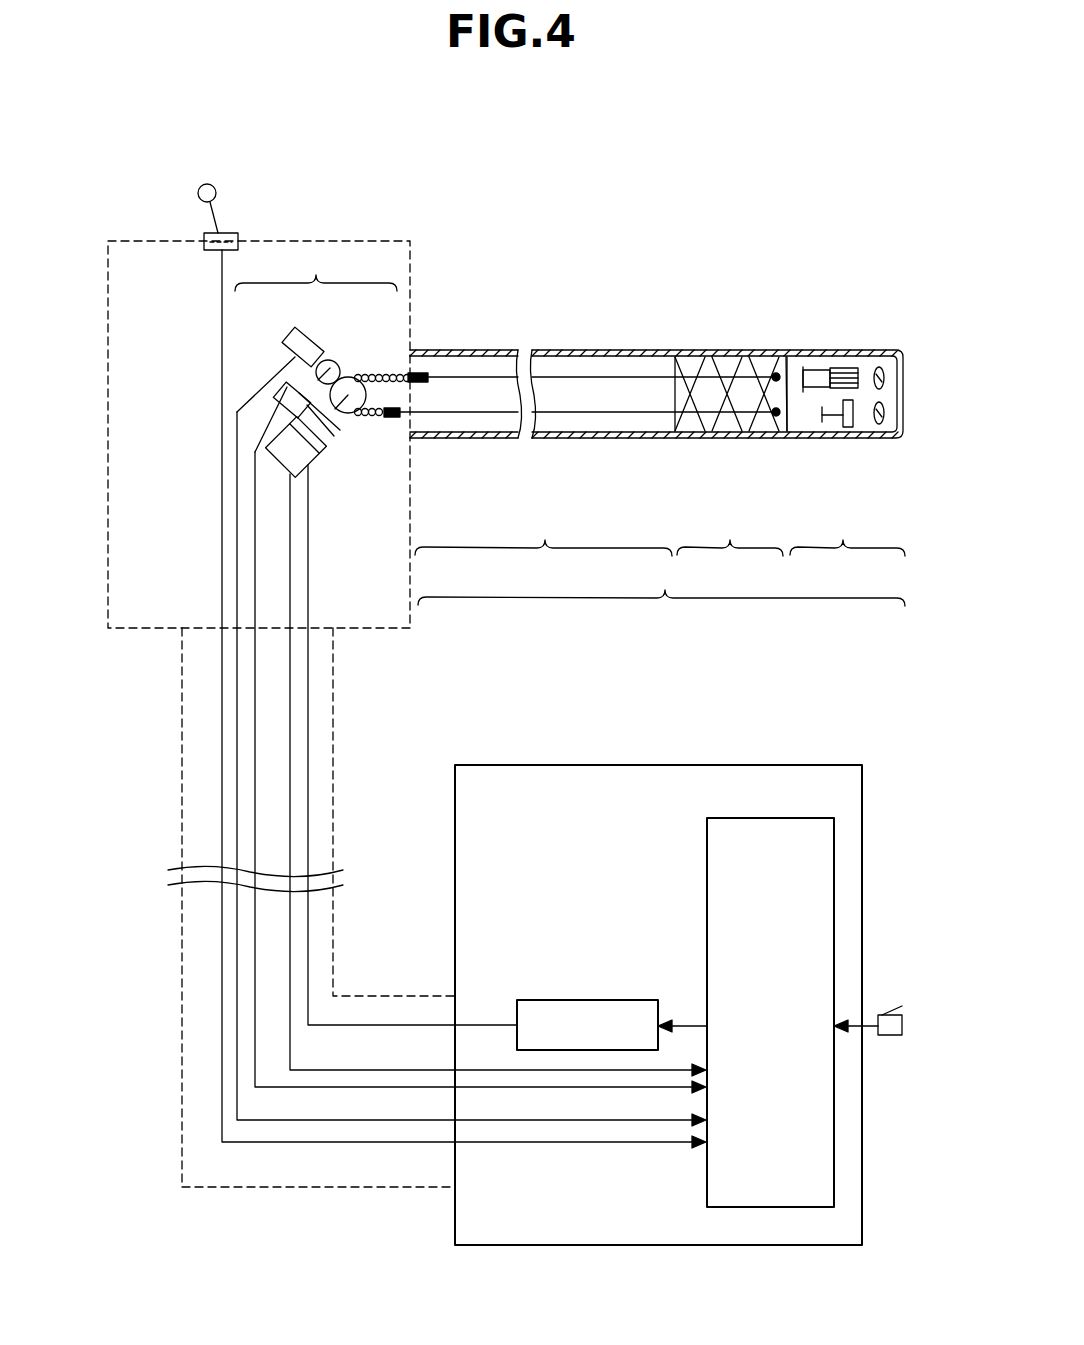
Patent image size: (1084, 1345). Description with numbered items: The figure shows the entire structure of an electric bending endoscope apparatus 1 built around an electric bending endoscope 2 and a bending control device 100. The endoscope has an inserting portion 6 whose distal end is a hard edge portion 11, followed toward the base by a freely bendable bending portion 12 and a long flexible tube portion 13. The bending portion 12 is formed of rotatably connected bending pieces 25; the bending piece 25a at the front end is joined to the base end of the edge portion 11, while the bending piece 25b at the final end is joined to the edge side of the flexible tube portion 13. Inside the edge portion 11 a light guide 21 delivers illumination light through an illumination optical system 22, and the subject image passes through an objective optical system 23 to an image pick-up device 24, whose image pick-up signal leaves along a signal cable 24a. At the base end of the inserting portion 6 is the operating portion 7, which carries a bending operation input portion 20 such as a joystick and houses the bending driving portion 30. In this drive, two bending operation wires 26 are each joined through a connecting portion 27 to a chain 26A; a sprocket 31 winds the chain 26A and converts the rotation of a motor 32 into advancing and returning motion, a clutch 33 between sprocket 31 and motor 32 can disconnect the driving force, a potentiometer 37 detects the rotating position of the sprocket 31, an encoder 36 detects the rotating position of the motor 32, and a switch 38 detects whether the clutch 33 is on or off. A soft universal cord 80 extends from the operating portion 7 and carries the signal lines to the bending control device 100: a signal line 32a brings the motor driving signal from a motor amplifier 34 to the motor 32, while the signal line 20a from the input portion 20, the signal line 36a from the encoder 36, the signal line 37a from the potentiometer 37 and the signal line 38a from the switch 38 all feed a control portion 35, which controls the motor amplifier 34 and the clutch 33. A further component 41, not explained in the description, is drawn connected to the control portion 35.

The electric bending endoscope apparatus 1 is at (145, 1085).
The electric bending endoscope 2 is at (492, 210).
The inserting portion 6 is at (657, 495).
The operating portion 7 is at (138, 240).
The edge portion 11 is at (847, 566).
The bending portion 12 is at (730, 566).
The flexible tube portion 13 is at (543, 566).
The bending operation input portion 20 is at (230, 232).
The signal line 20a is at (222, 735).
The light guide 21 is at (820, 368).
The illumination optical system 22 is at (881, 366).
The objective optical system 23 is at (880, 426).
The image pick-up device 24 is at (849, 428).
The signal cable 24a is at (828, 422).
The bending pieces 25 is at (745, 368).
The bending piece at the front end 25a is at (780, 360).
The bending piece at the final end 25b is at (678, 360).
The bending operation wire 26 is at (590, 410).
The chain 26A is at (383, 408).
The connecting portion 27 is at (420, 385).
The bending driving portion 30 is at (316, 268).
The sprocket 31 is at (352, 378).
The motor 32 is at (322, 455).
The signal line 32a is at (308, 672).
The clutch 33 is at (342, 432).
The motor amplifier 34 is at (620, 1000).
The control portion 35 is at (782, 818).
The encoder 36 is at (305, 478).
The signal line 36a is at (290, 720).
The potentiometer 37 is at (312, 338).
The signal line 37a is at (237, 782).
The switch for detecting clutch operation 38 is at (285, 385).
The signal line 38a is at (255, 828).
The switch 41 is at (890, 1036).
The universal cord 80 is at (333, 925).
The bending control device 100 is at (648, 765).